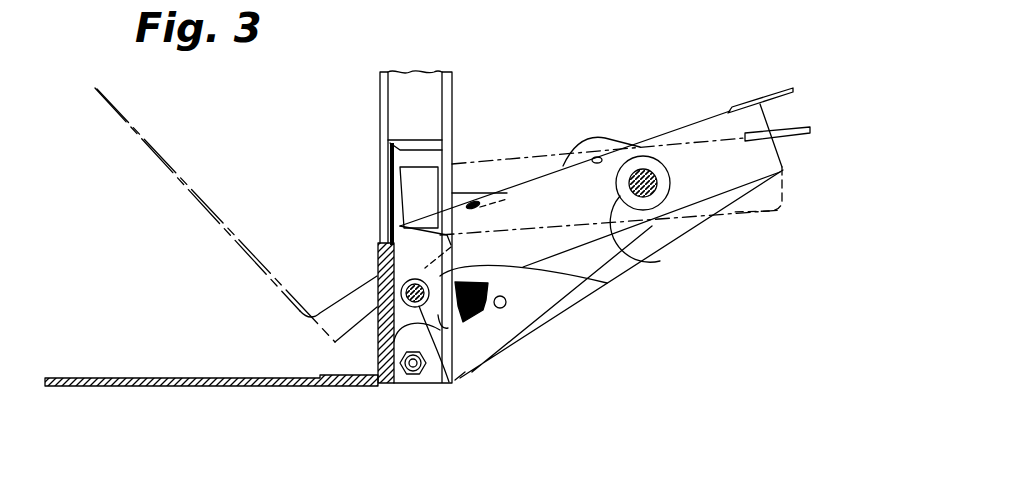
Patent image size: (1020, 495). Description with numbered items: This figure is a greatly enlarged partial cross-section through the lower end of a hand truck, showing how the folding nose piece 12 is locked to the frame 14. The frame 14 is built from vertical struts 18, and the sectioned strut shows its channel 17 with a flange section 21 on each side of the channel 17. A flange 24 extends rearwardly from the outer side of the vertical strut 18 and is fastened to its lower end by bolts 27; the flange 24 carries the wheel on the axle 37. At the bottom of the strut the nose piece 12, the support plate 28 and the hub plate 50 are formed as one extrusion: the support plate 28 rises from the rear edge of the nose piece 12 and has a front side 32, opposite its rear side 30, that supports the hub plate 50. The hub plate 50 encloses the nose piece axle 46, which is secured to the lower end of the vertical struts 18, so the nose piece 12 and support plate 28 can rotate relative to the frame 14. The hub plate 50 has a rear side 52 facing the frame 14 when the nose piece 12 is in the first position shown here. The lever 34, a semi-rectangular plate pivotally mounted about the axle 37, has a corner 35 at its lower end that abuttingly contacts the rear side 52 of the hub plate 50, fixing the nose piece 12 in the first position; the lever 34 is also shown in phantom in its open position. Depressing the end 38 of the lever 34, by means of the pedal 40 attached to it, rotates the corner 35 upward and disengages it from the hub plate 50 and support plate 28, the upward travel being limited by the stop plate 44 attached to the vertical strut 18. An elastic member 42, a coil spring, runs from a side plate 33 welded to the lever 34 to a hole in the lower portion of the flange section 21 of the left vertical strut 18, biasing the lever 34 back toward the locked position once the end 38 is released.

The nose piece 12 is at (204, 386).
The frame 14 is at (462, 86).
The channel 17 is at (397, 92).
The vertical strut 18 is at (417, 82).
The flange section 21 is at (388, 108).
The flange 24 is at (548, 332).
The bolt 27 is at (395, 233).
The support plate 28 is at (388, 385).
The rear side 30 is at (447, 384).
The front side 32 is at (378, 340).
The side plate 33 is at (503, 203).
The lever 34 is at (700, 202).
The corner 35 is at (607, 283).
The axle 37 is at (628, 247).
The end 38 is at (757, 118).
The pedal 40 is at (777, 88).
The elastic member 42 is at (507, 326).
The stop plate 44 is at (400, 165).
The nose piece axle 46 is at (458, 373).
The hub plate 50 is at (385, 268).
The rear side 52 is at (388, 245).